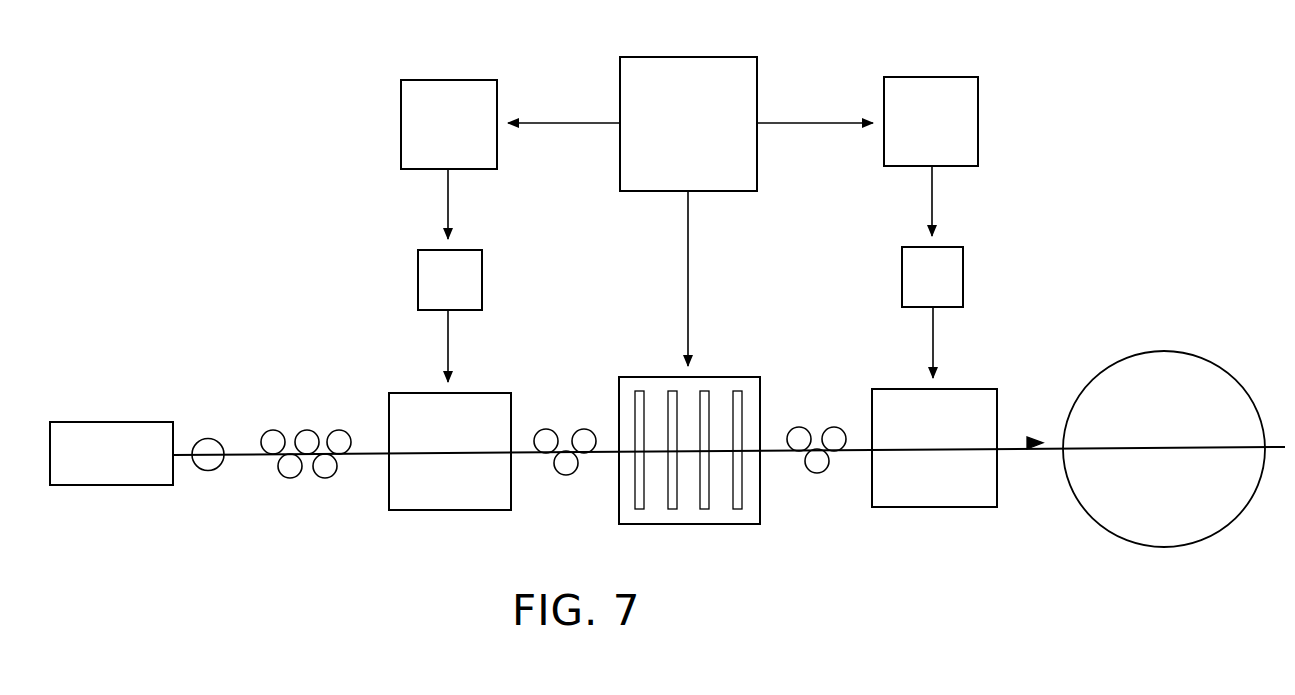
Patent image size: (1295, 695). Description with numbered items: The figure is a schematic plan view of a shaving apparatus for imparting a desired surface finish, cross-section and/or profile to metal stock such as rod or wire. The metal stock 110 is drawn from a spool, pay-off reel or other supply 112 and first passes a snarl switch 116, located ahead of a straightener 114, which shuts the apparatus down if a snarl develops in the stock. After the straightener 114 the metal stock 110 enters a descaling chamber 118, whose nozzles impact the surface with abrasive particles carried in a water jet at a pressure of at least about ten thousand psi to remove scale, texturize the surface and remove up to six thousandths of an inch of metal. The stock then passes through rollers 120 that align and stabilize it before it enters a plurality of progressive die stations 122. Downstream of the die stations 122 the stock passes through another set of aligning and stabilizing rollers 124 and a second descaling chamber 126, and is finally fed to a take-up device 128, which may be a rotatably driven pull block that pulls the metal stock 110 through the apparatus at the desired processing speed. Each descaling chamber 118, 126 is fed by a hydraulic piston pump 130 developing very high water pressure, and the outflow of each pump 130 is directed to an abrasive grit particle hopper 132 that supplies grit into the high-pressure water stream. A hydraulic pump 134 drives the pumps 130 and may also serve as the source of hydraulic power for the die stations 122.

The metal stock 110 is at (1010, 450).
The supply 112 is at (143, 485).
The straightener 114 is at (310, 481).
The snarl switch 116 is at (218, 468).
The descaling chamber 118 is at (439, 510).
The rollers 120 is at (566, 489).
The progressive die stations 122 is at (738, 524).
The aligning and stabilizing rollers 124 is at (817, 491).
The descaling chamber 126 is at (955, 507).
The take-up device 128 is at (1095, 522).
The hydraulic piston pump 130 is at (497, 100).
The abrasive grit particle hopper 132 is at (482, 272).
The hydraulic pump 134 is at (698, 57).